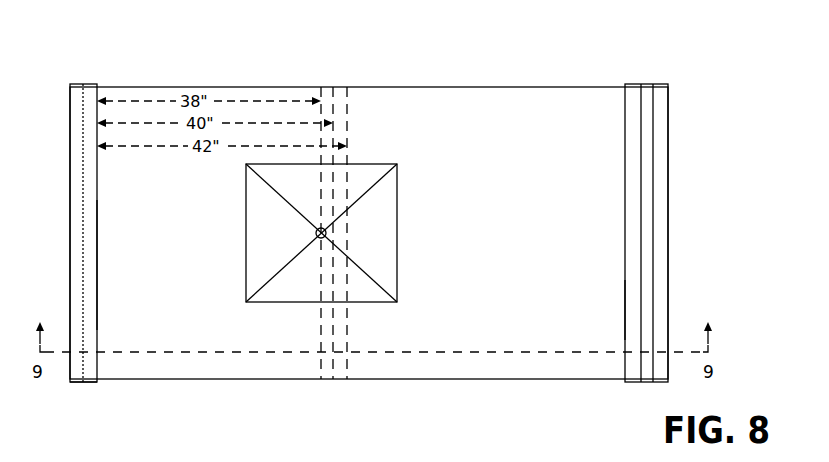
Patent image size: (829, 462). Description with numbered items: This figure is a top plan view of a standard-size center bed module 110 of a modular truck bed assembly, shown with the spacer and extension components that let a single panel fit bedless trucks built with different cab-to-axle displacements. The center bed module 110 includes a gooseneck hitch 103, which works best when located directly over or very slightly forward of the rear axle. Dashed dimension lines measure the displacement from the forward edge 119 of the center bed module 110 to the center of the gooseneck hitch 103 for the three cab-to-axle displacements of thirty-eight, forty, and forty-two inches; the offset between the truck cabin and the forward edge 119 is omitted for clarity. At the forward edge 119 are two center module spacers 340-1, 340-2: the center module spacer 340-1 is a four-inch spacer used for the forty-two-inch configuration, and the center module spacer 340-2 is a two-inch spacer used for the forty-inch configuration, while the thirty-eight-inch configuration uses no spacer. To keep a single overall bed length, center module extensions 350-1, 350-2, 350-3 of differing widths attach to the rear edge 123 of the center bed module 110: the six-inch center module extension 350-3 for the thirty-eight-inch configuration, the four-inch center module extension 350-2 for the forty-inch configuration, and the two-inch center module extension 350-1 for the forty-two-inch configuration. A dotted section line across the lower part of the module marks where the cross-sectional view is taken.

The center bed module 110 is at (238, 86).
The center module spacer 340-1 is at (95, 84).
The center module spacer 340-2 is at (88, 382).
The forward edge 119 is at (97, 266).
The center module extension 350-1 is at (641, 262).
The center module extension 350-2 is at (653, 190).
The center module extension 350-3 is at (668, 110).
The rear edge 123 is at (625, 313).
The gooseneck hitch 103 is at (246, 198).